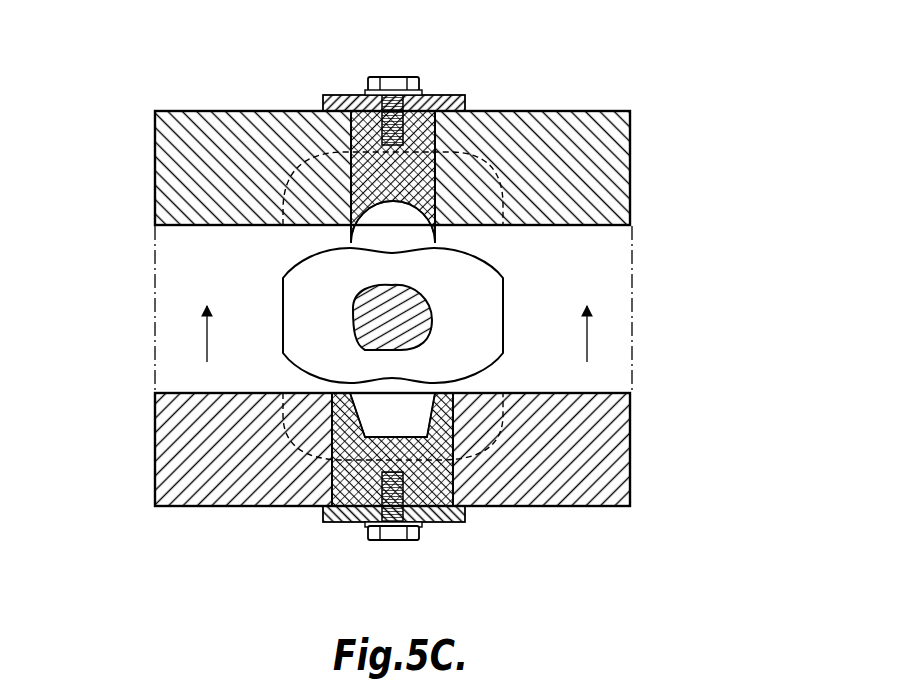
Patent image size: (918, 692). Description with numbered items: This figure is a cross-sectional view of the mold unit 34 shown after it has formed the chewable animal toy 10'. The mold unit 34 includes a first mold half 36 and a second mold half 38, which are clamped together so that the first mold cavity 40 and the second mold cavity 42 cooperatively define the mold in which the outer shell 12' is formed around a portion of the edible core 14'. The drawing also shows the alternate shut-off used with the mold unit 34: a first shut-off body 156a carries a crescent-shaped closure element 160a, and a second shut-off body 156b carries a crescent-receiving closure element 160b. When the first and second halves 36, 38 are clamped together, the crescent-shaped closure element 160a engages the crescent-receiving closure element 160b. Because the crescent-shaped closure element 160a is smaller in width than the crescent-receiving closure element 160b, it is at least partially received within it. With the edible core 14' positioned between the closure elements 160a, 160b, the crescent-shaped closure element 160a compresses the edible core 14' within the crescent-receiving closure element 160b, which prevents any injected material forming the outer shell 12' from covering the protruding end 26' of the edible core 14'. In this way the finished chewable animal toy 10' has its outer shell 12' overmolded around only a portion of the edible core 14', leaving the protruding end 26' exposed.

The mold unit 34 is at (124, 66).
The second mold half 38 is at (138, 166).
The first mold half 36 is at (145, 439).
The second mold cavity 42 is at (455, 158).
The first mold cavity 40 is at (494, 462).
The first shut-off body 156a is at (425, 118).
The second shut-off body 156b is at (343, 500).
The crescent-shaped closure element 160a is at (375, 207).
The crescent-receiving closure element 160b is at (428, 421).
The chewable animal toy 10' is at (380, 315).
The outer shell 12' is at (427, 315).
The edible core 14' is at (450, 317).
The second protruding end 26' is at (477, 344).